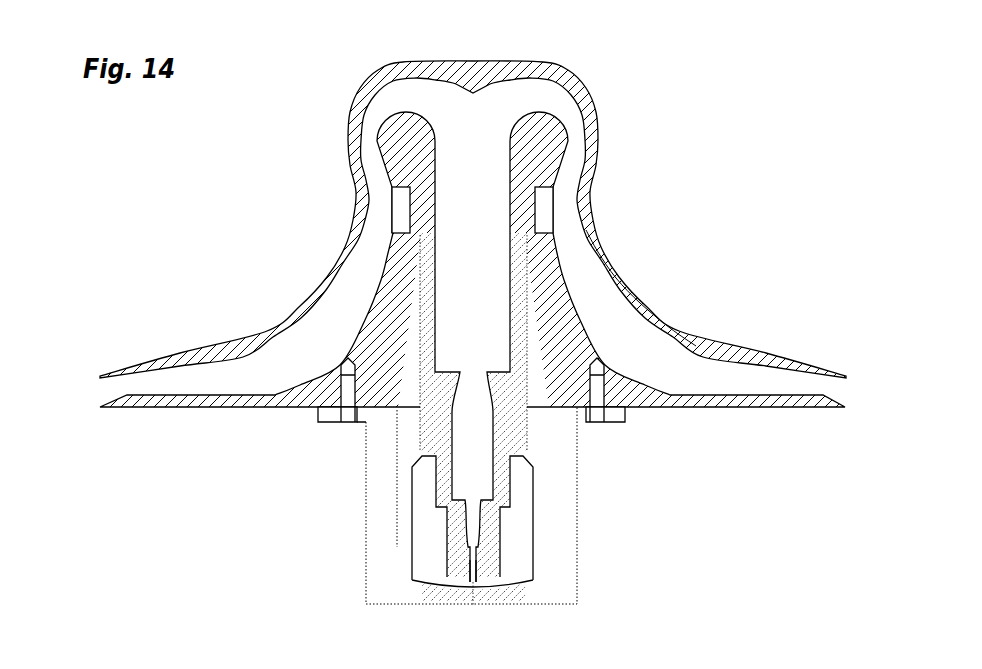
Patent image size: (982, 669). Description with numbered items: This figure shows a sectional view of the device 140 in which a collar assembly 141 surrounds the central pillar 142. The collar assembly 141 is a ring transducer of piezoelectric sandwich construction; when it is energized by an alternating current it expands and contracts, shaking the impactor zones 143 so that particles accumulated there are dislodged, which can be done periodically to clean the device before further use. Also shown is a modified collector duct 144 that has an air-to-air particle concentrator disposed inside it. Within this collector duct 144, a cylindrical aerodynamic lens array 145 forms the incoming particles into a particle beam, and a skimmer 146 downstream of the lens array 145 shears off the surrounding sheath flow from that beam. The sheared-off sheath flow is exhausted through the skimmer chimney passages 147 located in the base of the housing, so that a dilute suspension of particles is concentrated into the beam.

The nozzle arrangement 140 is at (175, 192).
The collar assembly 141 is at (387, 211).
The central pillar 142 is at (558, 268).
The impactor zones 143 is at (565, 178).
The modified collector duct 144 is at (514, 156).
The cylindrical aerodynamic lens array 145 is at (540, 441).
The skimmer 146 is at (484, 592).
The skimmer chimney passages 147 is at (519, 557).